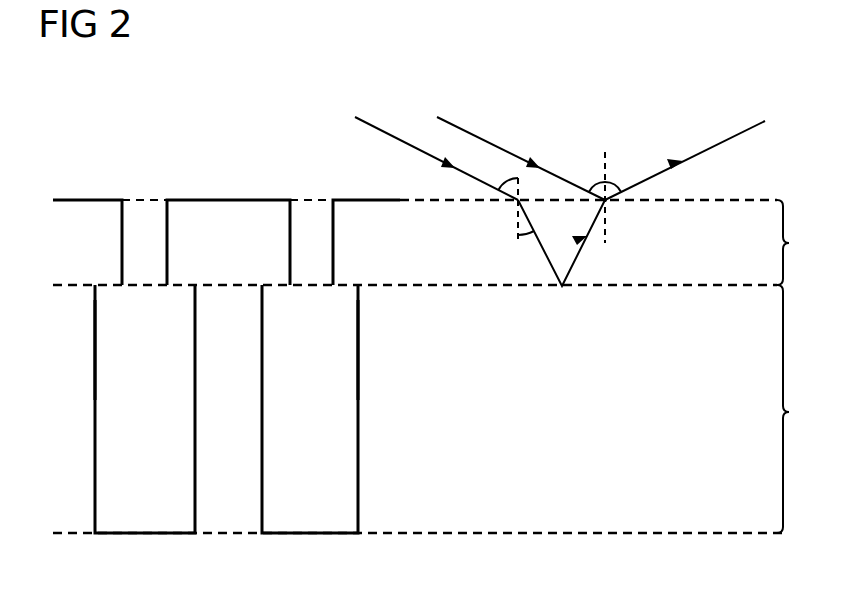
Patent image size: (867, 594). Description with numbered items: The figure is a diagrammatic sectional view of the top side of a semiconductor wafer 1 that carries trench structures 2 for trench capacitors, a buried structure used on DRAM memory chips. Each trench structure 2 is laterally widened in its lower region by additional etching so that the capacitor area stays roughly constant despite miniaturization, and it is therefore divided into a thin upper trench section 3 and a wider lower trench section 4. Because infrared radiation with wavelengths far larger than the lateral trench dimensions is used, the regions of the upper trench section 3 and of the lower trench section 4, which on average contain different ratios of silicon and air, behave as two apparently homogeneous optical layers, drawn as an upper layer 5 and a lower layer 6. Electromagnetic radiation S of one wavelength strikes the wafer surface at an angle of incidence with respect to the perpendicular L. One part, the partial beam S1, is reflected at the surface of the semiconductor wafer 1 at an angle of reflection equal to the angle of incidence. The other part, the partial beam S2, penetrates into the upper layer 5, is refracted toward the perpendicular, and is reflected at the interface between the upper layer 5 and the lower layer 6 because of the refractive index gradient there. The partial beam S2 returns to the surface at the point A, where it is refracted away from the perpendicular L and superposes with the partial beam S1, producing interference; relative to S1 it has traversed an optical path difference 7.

The semiconductor wafer 1 is at (224, 125).
The trench structure 2 is at (95, 418).
The upper trench section 3 is at (147, 218).
The lower trench section 4 is at (116, 357).
The upper layer 5 is at (795, 242).
The lower layer 6 is at (795, 409).
The optical path difference 7 is at (552, 272).
The electromagnetic radiation S is at (392, 64).
The partial beam S1 is at (474, 135).
The partial beam S2 is at (392, 136).
The perpendicular L is at (606, 152).
The point A is at (608, 204).